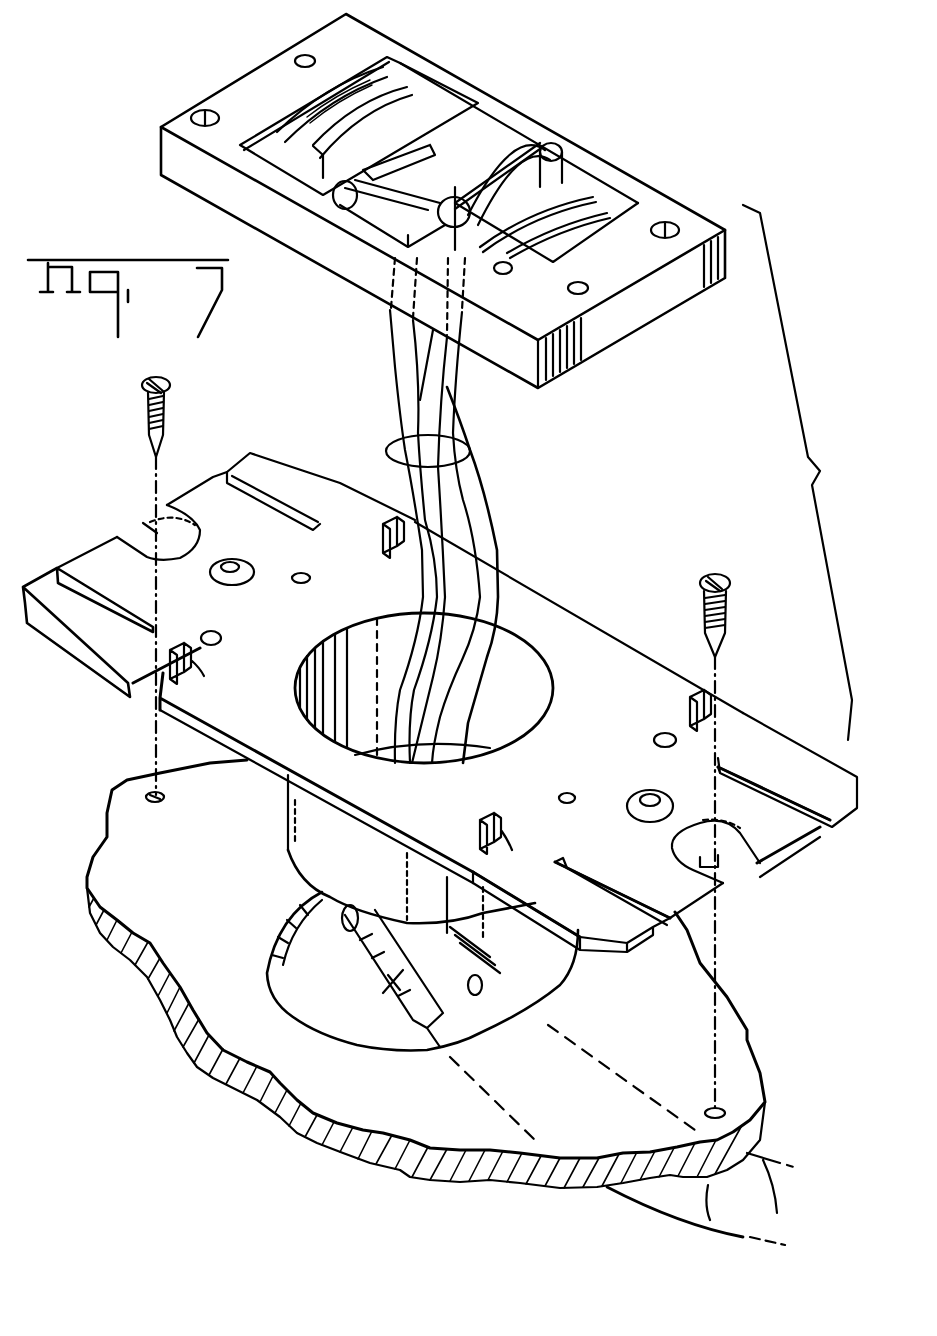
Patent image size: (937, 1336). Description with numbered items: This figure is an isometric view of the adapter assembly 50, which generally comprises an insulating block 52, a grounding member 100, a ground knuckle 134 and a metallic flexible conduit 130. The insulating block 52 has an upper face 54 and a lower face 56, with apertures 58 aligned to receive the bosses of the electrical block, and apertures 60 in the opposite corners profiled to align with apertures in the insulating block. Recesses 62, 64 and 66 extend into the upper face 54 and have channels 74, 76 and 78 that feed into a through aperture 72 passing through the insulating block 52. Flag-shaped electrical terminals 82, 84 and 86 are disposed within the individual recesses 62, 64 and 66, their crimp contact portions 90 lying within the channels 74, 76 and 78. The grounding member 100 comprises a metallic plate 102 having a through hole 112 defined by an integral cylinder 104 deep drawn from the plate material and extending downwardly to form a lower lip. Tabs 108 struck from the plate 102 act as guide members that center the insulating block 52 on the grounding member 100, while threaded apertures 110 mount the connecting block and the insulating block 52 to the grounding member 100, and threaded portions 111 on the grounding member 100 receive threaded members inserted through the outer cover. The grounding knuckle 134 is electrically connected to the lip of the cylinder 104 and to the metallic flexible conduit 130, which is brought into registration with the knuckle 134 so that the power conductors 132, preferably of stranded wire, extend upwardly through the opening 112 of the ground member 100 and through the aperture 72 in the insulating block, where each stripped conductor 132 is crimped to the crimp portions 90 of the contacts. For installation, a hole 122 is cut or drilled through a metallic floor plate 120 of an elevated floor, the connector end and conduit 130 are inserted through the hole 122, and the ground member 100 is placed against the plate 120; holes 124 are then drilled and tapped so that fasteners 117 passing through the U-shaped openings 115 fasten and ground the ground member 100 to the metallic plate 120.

The adapter assembly 50 is at (797, 472).
The insulating block 52 is at (640, 185).
The upper face 54 is at (398, 42).
The lower face 56 is at (577, 368).
The apertures 58 is at (205, 110).
The apertures 60 is at (303, 55).
The recess 62 is at (513, 273).
The recess 64 is at (478, 115).
The recess 66 is at (400, 95).
The through aperture 72 is at (386, 320).
The channel 74 is at (580, 173).
The channel 76 is at (457, 227).
The channel 78 is at (367, 217).
The flag-shaped electrical terminal 82 is at (547, 247).
The flag-shaped electrical terminal 84 is at (478, 150).
The flag-shaped electrical terminal 86 is at (302, 145).
The crimp contact portion 90 is at (552, 163).
The grounding member 100 is at (77, 538).
The metallic plate 102 is at (157, 722).
The cylinder 104 is at (317, 845).
The tabs 108 is at (173, 643).
The threaded apertures 110 is at (312, 577).
The threaded portions 111 is at (233, 557).
The through hole 112 is at (507, 690).
The U-shaped openings 115 is at (157, 550).
The fasteners 117 is at (173, 403).
The metallic plate 120 is at (303, 1062).
The hole 122 is at (290, 1000).
The holes 124 is at (723, 1107).
The metallic flexible conduit 130 is at (675, 1200).
The power conductors 132 is at (467, 430).
The grounding knuckle 134 is at (403, 967).